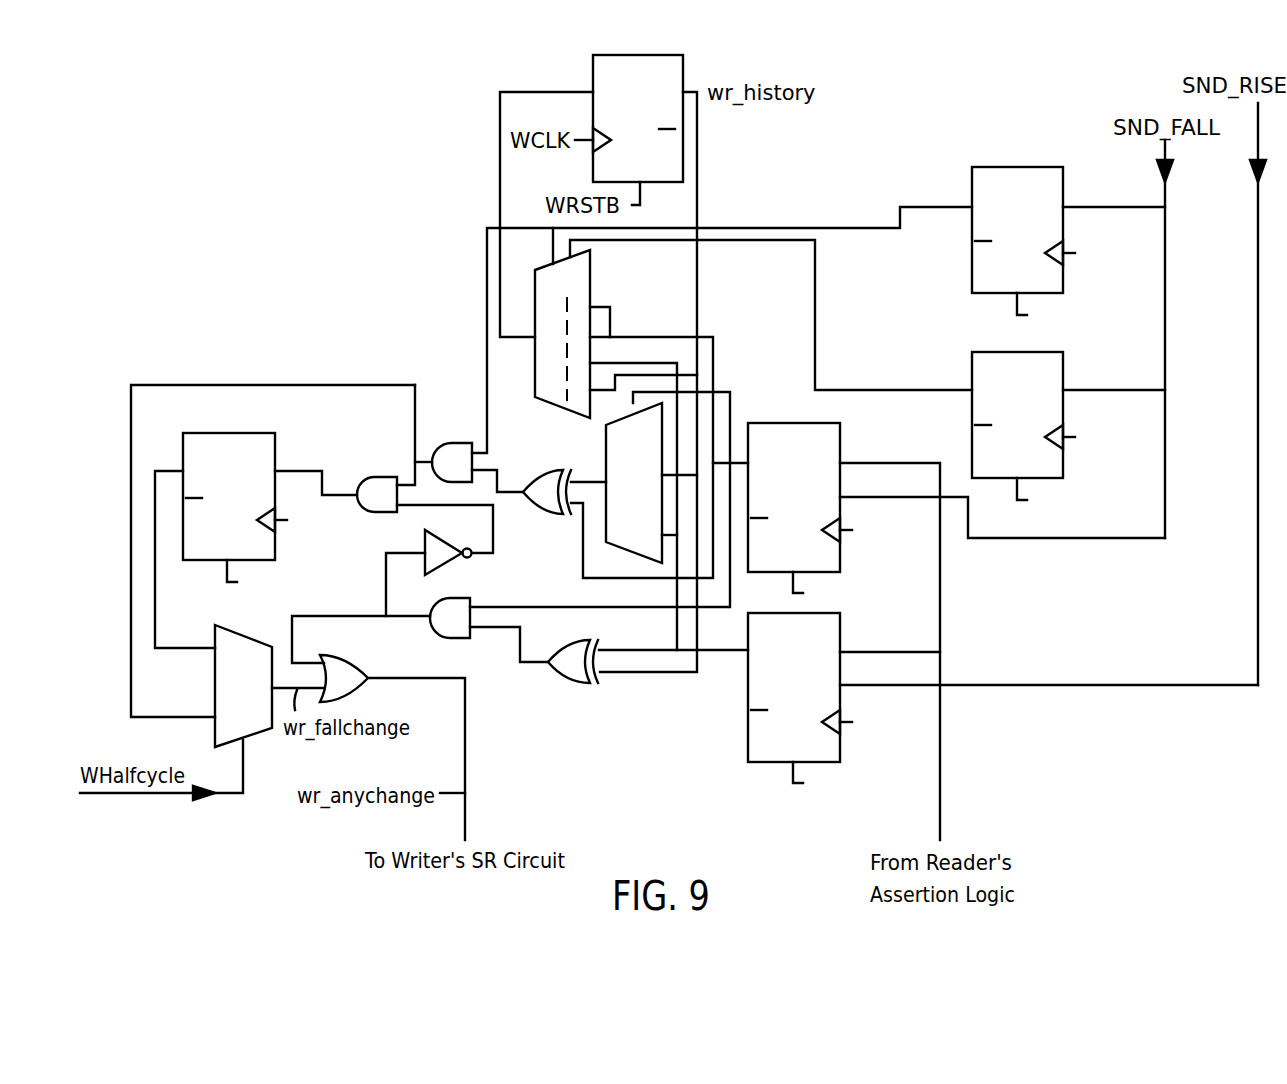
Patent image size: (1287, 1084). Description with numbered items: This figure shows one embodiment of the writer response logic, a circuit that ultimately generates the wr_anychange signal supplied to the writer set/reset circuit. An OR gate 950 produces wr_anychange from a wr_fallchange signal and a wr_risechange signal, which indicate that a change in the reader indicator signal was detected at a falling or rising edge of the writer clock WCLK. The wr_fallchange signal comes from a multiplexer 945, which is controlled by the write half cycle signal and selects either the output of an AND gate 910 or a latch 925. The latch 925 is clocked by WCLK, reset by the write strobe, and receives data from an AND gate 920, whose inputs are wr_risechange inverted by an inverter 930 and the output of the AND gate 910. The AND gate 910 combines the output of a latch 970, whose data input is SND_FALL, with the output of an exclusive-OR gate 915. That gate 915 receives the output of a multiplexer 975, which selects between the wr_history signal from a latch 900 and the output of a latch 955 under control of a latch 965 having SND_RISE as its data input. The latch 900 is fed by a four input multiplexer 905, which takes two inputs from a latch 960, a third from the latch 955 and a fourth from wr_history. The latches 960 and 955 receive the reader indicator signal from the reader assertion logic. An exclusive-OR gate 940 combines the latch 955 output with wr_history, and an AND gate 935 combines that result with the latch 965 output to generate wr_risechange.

The latch 900 is at (592, 72).
The four input multiplexer 905 is at (593, 270).
The AND gate 910 is at (460, 442).
The exclusive-OR gate 915 is at (552, 471).
The AND gate 920 is at (374, 476).
The latch 925 is at (232, 433).
The inverter 930 is at (450, 568).
The AND gate 935 is at (450, 640).
The exclusive-OR gate 940 is at (570, 685).
The multiplexer 945 is at (223, 625).
The OR gate 950 is at (352, 656).
The latch 955 is at (770, 763).
The latch 960 is at (818, 423).
The latch 965 is at (993, 351).
The latch 970 is at (995, 166).
The multiplexer 975 is at (605, 441).